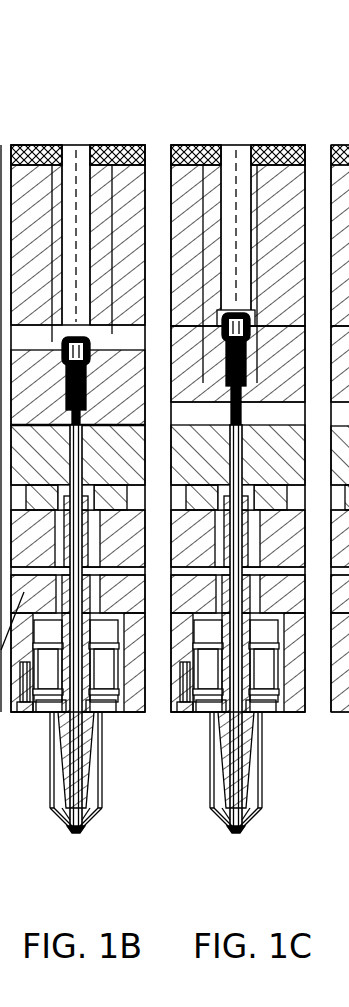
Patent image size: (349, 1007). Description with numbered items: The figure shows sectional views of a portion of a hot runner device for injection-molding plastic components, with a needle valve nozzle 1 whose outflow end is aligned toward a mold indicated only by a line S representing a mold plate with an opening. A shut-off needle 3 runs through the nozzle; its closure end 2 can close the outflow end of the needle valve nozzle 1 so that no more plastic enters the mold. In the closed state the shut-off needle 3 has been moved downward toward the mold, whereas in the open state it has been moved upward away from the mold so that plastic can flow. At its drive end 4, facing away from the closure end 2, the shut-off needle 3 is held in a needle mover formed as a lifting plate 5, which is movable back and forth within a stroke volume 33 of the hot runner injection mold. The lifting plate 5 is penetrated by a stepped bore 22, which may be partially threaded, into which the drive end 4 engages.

In FIG. 1B, the needle valve nozzle 1 is at (52, 773).
In FIG. 1C, the needle valve nozzle 1 is at (212, 770).
In FIG. 1B, the closure end 2 is at (71, 838).
In FIG. 1C, the closure end 2 is at (235, 838).
In FIG. 1B, the shut-off needle 3 is at (108, 488).
In FIG. 1C, the shut-off needle 3 is at (272, 486).
In FIG. 1B, the drive end 4 is at (77, 379).
In FIG. 1C, the drive end 4 is at (200, 145).
In FIG. 1B, the lifting plate 5 is at (118, 145).
In FIG. 1C, the lifting plate 5 is at (298, 145).
In FIG. 1C, the stepped bore 22 is at (268, 145).
In FIG. 1B, the stroke volume 33 is at (52, 145).
In FIG. 1B, the mold plate line S is at (85, 833).
In FIG. 1C, the mold plate line S is at (246, 833).